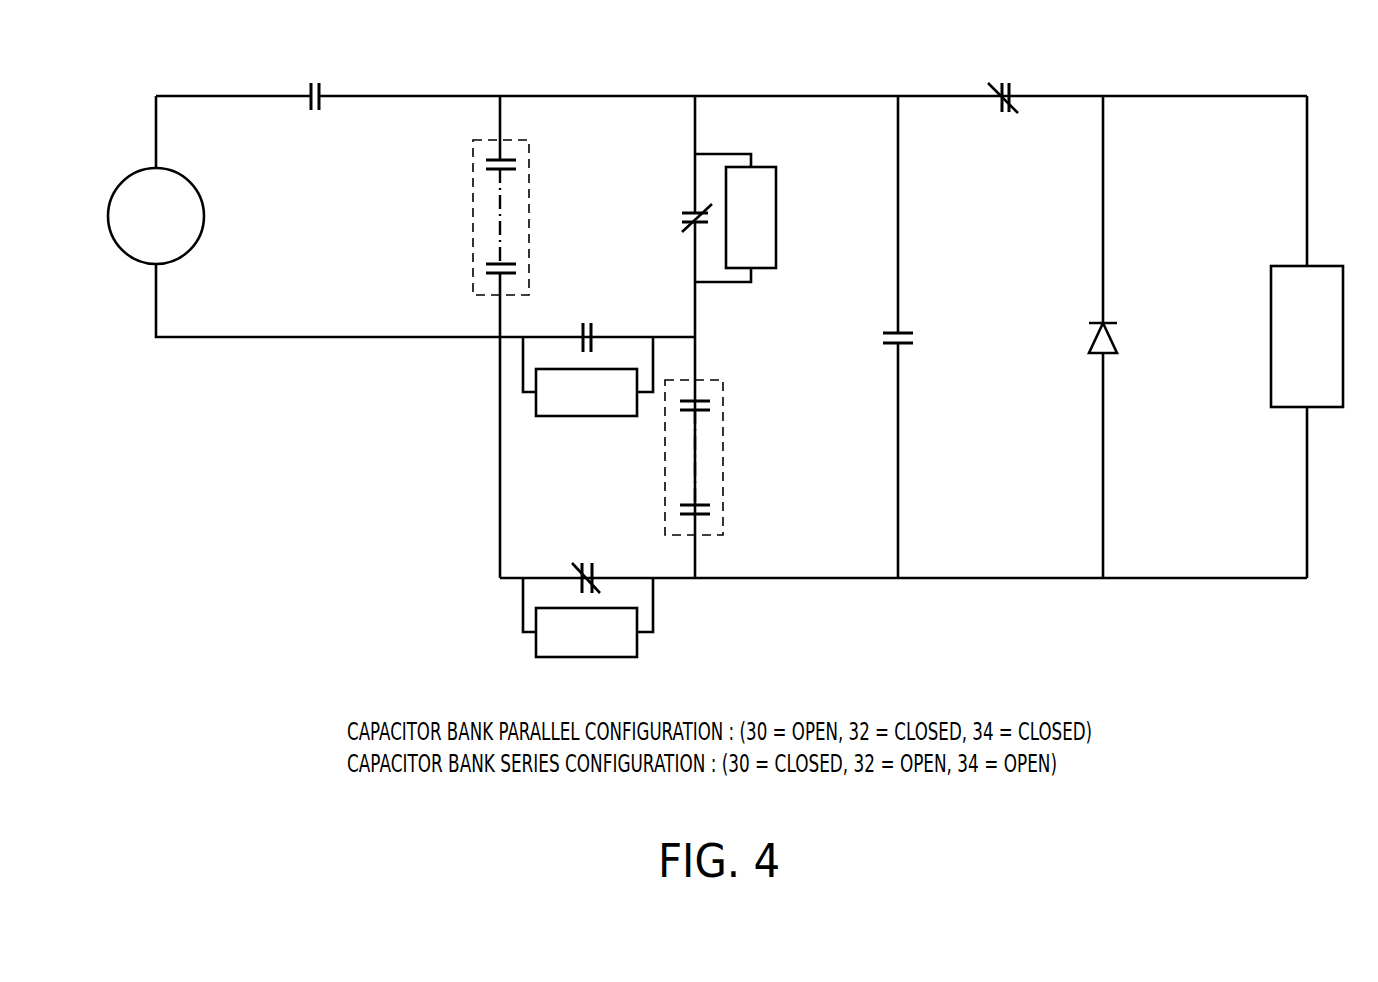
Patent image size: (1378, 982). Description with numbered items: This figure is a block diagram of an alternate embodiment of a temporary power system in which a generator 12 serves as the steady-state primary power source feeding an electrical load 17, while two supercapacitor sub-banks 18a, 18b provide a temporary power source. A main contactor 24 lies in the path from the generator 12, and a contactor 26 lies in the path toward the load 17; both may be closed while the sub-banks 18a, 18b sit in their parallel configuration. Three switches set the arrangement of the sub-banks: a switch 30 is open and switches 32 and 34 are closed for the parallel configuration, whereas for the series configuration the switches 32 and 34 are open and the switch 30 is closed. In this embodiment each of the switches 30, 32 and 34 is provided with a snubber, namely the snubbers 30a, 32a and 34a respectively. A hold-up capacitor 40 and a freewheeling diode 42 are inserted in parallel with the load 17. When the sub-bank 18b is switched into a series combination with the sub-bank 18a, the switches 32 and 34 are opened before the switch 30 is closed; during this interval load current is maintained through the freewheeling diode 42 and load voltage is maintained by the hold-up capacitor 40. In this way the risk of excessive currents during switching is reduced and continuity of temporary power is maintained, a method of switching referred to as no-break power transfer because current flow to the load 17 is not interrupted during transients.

The generator 12 is at (131, 168).
The electrical load 17 is at (1270, 300).
The supercapacitor sub-bank 18a is at (472, 232).
The supercapacitor sub-bank 18b is at (665, 472).
The main contactor 24 is at (313, 81).
The contactor 26 is at (1003, 81).
The switch 30 is at (590, 321).
The snubber 30a is at (560, 418).
The switch 32 is at (686, 216).
The snubber 32a is at (776, 228).
The switch 34 is at (585, 563).
The snubber 34a is at (535, 650).
The hold-up capacitor 40 is at (915, 340).
The freewheeling diode 42 is at (1118, 338).